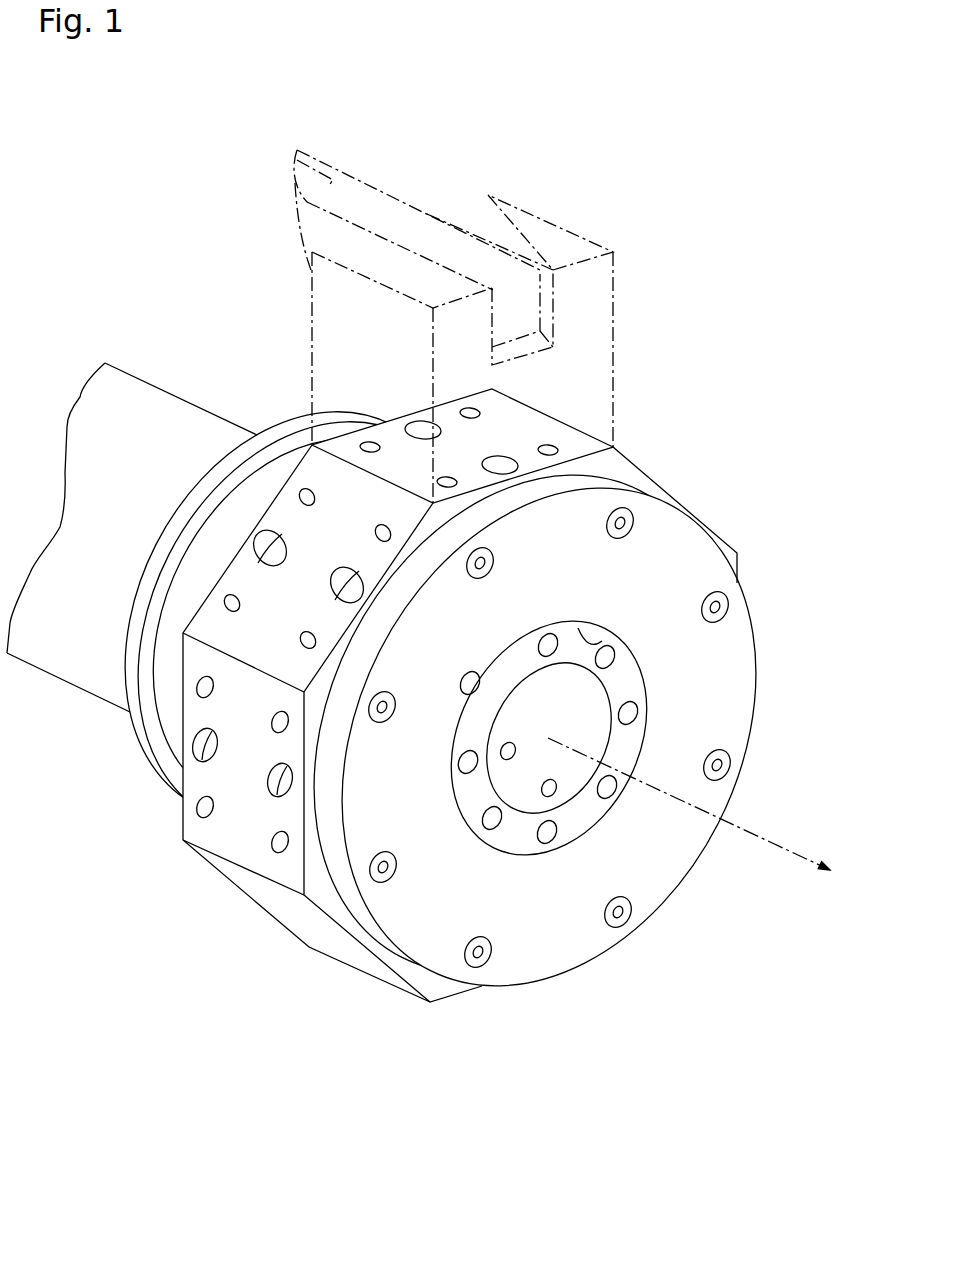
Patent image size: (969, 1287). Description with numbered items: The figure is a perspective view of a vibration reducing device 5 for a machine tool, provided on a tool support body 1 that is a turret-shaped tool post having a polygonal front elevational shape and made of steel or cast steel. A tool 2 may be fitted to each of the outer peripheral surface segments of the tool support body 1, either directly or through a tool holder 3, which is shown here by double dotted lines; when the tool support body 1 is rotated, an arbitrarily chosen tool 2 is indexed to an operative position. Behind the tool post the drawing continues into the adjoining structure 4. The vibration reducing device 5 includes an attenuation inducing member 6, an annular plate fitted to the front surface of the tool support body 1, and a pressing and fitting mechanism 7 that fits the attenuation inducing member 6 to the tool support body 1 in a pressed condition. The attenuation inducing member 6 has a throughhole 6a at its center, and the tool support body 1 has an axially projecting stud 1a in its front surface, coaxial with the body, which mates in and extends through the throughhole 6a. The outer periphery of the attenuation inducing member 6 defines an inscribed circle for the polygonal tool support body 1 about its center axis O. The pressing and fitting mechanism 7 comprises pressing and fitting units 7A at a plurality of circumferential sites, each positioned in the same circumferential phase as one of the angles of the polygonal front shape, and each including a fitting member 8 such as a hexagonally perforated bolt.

The tool support body 1 is at (230, 845).
The axially projecting stud 1a is at (477, 800).
The tool 2 is at (375, 197).
The tool holder 3 is at (525, 212).
The rear body / support 4 is at (107, 673).
The vibration reducing device 5 is at (535, 730).
The attenuation inducing member 6 is at (633, 867).
The throughhole 6a is at (593, 640).
The pressing and fitting mechanism 7 is at (660, 953).
The pressing and fitting units 7A is at (733, 748).
The fitting member 8 is at (730, 764).
The center axis O is at (748, 833).